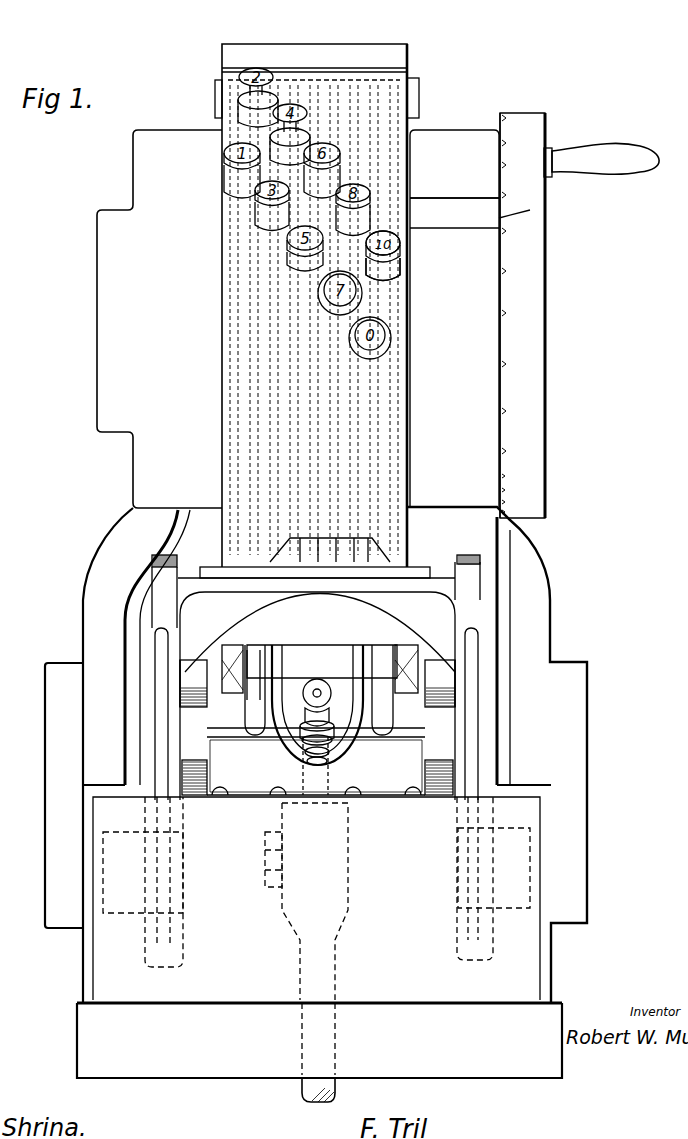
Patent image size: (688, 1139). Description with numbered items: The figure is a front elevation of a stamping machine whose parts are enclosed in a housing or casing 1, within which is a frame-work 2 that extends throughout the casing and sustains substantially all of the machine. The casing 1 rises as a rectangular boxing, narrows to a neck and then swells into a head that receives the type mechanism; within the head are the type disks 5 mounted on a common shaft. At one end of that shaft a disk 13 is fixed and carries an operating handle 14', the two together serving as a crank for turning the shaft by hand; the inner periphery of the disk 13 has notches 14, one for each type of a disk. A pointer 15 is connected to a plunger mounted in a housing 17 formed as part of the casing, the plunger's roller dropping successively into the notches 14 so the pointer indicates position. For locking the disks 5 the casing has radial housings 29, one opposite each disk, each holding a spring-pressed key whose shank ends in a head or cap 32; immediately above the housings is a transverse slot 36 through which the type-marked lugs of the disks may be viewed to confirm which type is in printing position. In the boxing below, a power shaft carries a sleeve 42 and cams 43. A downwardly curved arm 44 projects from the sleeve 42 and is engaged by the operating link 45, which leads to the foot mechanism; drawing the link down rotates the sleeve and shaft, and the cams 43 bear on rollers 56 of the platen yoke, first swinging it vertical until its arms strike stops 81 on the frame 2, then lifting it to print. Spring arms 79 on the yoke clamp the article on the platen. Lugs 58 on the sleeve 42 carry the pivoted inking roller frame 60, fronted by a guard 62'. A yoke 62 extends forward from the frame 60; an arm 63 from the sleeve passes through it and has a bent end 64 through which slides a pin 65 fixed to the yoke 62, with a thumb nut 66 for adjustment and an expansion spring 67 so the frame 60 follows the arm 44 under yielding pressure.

The inclosing housing or casing 1 is at (387, 48).
The frame-work 2 is at (462, 138).
The type disks 5 is at (310, 556).
The disk 13 is at (532, 380).
The notches 14 is at (539, 315).
The operating handle 14' is at (601, 145).
The pointer 15 is at (499, 218).
The housing 17 is at (458, 218).
The radial housings 29 is at (398, 266).
The head or cap 32 is at (390, 240).
The transverse slot 36 is at (394, 72).
The sleeve 42 is at (386, 790).
The cams 43 is at (196, 798).
The downwardly curved arm 44 is at (355, 910).
The operating link 45 is at (301, 1082).
The rollers 56 is at (187, 677).
The arms or lugs 58 is at (254, 708).
The frame 60 is at (228, 672).
The yoke 62 is at (301, 706).
The guard 62' is at (320, 636).
The arm 63 is at (316, 689).
The bent end 64 is at (330, 736).
The pin 65 is at (300, 762).
The thumb nut 66 is at (312, 688).
The expansion spring 67 is at (328, 760).
The spring arm 79 is at (170, 555).
The stops 81 is at (82, 930).